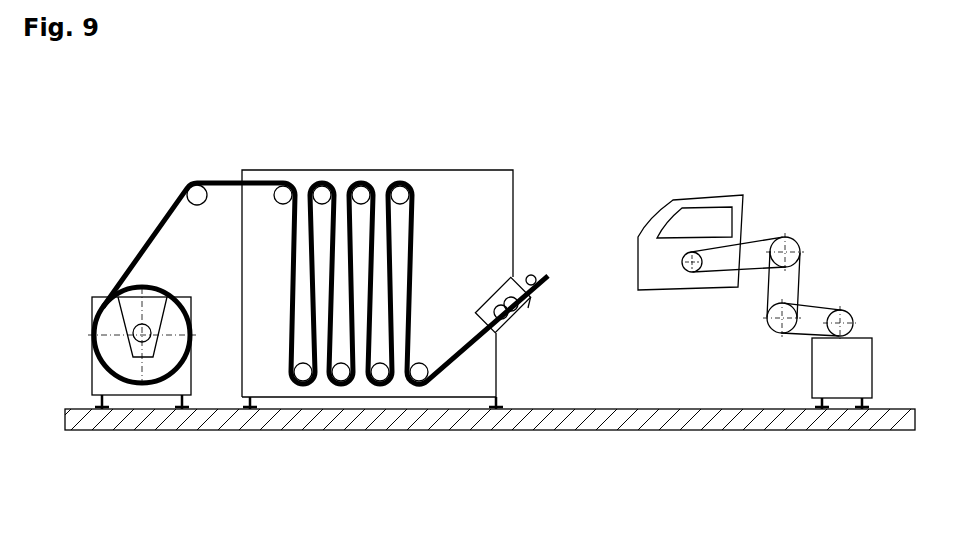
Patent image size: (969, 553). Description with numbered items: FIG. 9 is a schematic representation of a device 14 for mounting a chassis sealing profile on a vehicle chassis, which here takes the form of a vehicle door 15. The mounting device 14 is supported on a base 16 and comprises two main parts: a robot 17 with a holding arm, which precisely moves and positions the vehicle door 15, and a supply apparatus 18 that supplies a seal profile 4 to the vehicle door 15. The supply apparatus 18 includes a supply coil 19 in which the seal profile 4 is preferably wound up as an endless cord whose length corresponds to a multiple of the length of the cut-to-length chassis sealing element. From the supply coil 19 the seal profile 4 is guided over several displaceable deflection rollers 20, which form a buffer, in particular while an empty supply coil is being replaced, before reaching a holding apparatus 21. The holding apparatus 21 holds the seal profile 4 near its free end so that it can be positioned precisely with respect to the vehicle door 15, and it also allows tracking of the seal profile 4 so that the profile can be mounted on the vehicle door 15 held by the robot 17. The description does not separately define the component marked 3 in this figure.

The web processing device 3 is at (548, 272).
The seal profile 4 is at (171, 220).
The device 14 is at (789, 64).
The vehicle door 15 is at (670, 200).
The base 16 is at (100, 430).
The robot 17 is at (800, 272).
The supply apparatus 18 is at (254, 111).
The supply coil 19 is at (108, 300).
The deflection rollers 20 is at (405, 190).
The holding apparatus 21 is at (527, 310).